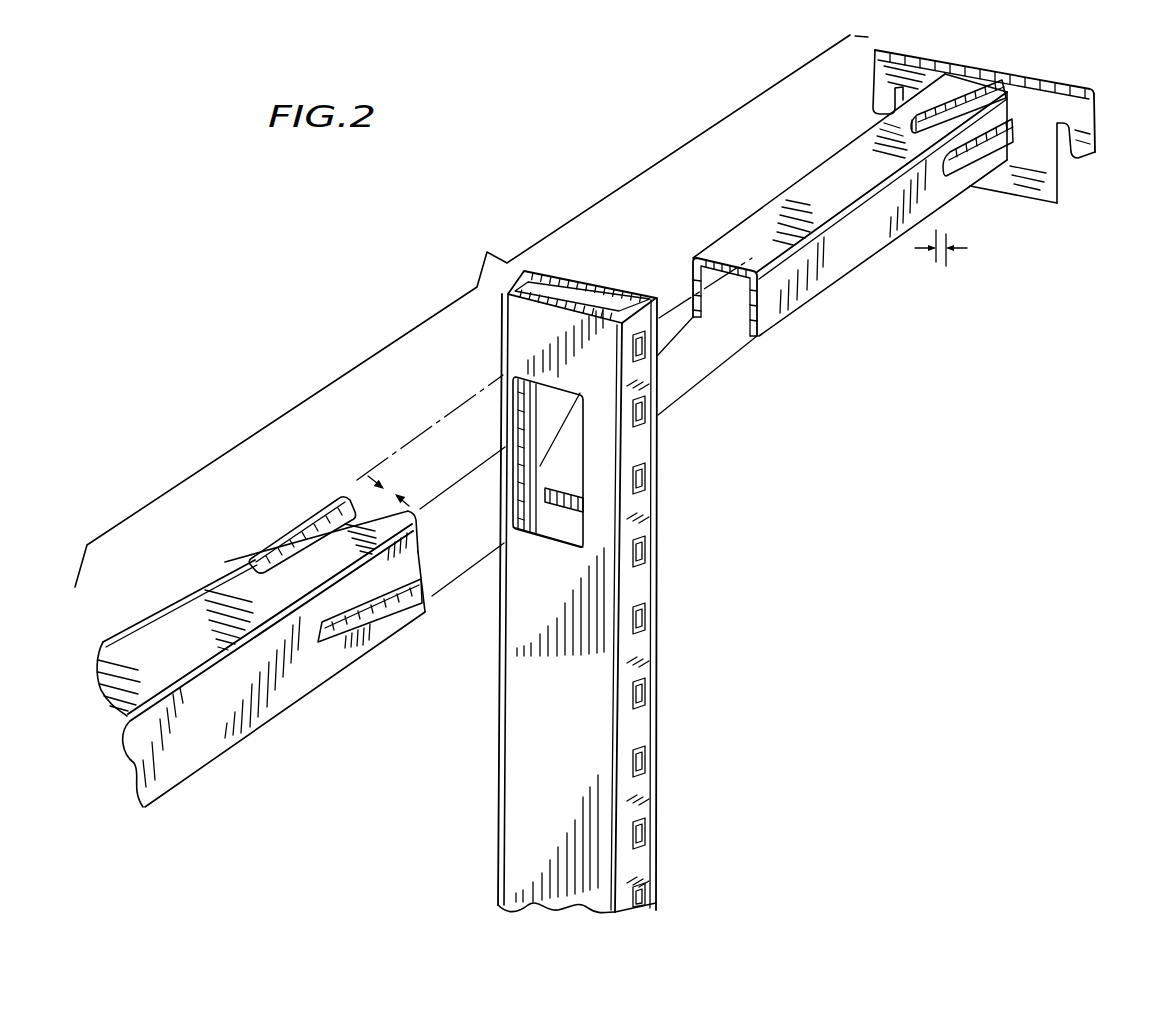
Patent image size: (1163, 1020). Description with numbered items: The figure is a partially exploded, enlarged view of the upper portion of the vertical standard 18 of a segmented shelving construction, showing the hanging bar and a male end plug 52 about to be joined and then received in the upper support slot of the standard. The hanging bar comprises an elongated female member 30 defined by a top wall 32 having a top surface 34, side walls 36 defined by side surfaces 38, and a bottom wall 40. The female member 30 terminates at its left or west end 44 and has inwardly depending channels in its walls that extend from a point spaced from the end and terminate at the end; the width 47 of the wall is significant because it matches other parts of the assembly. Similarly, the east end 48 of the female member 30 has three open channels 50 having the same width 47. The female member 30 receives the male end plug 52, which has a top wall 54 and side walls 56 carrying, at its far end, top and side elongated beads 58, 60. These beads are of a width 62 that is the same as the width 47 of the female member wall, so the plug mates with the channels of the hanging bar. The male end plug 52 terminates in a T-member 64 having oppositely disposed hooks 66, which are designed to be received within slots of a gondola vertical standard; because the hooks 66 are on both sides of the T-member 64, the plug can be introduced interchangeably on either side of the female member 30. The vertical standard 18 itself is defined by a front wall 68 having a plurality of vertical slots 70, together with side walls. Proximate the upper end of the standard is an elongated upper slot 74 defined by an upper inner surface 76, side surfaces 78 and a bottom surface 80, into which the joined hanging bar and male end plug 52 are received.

The vertical standard 18 is at (663, 690).
The elongated female member 30 is at (181, 586).
The top wall 32 is at (201, 598).
The top surface 34 is at (180, 656).
The side walls 36 is at (275, 705).
The side surfaces 38 is at (210, 747).
The bottom wall 40 is at (412, 562).
The west end 44 is at (427, 599).
The width 47 is at (400, 480).
The east end 48 is at (262, 540).
The open channels 50 is at (330, 540).
The male end plug 52 is at (735, 220).
The top wall 54 is at (812, 193).
The side walls 56 is at (693, 290).
The top elongated bead 58 is at (890, 152).
The side elongated bead 60 is at (893, 218).
The width 62 is at (944, 258).
The T-member 64 is at (1027, 98).
The hooks 66 is at (880, 93).
The front wall 68 is at (650, 857).
The vertical slots 70 is at (640, 778).
The elongated upper slot 74 is at (583, 537).
The upper inner surface 76 is at (519, 372).
The side surfaces 78 is at (533, 456).
The bottom surface 80 is at (545, 530).